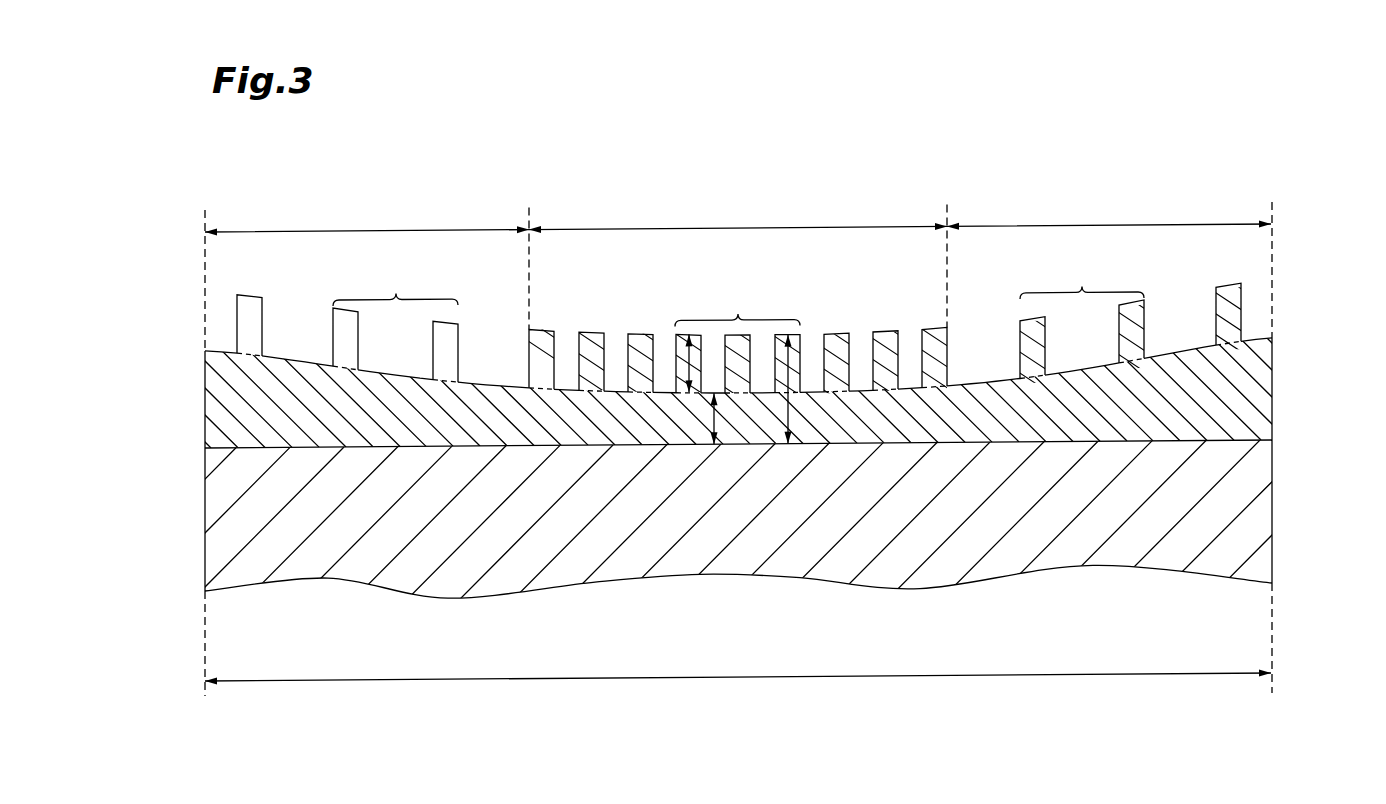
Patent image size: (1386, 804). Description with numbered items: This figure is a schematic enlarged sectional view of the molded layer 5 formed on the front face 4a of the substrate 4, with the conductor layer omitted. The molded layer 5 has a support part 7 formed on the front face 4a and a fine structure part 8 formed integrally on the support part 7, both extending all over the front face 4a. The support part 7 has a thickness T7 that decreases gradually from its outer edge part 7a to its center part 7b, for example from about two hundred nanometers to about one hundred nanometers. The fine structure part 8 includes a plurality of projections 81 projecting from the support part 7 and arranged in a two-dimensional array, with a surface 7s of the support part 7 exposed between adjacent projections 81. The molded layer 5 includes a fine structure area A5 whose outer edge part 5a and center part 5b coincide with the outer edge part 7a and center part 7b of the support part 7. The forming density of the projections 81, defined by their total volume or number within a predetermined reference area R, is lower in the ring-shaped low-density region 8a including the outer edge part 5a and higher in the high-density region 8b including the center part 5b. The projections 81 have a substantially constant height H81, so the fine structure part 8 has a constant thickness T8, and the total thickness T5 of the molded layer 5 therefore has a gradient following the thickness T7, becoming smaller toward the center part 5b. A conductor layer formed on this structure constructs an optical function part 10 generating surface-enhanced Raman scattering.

The optical function part 10 is at (1286, 268).
The fine structure part 8 is at (1278, 310).
The projections 81 is at (455, 346).
The low-density region 8a is at (738, 213).
The high-density region 8b is at (738, 214).
The molded layer 5 is at (1330, 302).
The support part 7 is at (1258, 384).
The outer edge part of the support part 7a is at (738, 496).
The outer edge part of the fine structure area 5a is at (294, 466).
The center part of the support part 7b is at (738, 519).
The center part of the fine structure area 5b is at (765, 466).
The surface of the support part 7s is at (668, 393).
The substrate 4 is at (1273, 512).
The front face of the substrate 4a is at (1243, 447).
The thickness of the support part T7 is at (714, 420).
The thickness of the molded layer T5 is at (796, 378).
The height of the projections H81 is at (664, 327).
The thickness of the fine structure part T8 is at (676, 364).
The reference area R is at (738, 295).
The fine structure area A5 is at (738, 692).